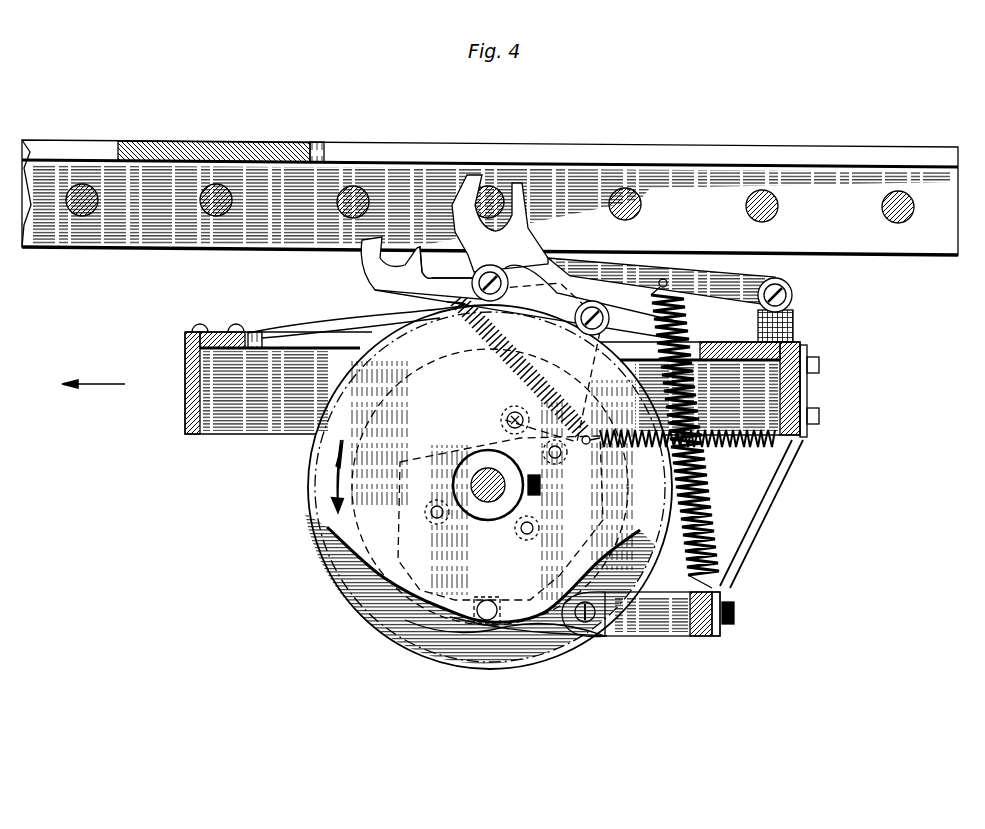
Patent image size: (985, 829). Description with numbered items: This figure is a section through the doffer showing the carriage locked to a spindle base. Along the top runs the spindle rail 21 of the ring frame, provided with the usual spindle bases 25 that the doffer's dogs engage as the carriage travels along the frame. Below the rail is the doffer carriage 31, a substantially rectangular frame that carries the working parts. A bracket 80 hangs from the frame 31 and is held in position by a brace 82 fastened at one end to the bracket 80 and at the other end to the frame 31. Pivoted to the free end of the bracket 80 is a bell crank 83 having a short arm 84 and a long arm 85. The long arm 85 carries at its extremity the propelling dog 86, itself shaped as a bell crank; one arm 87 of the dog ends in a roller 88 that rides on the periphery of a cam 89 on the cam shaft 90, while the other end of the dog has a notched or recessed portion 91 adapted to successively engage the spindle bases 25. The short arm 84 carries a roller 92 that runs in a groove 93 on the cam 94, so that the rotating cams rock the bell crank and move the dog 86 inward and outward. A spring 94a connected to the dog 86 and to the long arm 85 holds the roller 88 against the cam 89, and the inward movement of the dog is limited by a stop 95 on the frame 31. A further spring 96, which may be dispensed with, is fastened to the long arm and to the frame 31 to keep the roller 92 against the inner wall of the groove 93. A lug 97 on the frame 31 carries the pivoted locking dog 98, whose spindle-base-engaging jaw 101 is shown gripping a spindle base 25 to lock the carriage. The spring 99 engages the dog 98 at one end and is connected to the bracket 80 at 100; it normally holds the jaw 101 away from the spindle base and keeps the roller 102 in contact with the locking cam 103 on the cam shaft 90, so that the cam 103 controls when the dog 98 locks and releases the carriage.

The spindle rail 21 is at (215, 152).
The spindle base 25 is at (92, 208).
The doffer carriage 31 is at (806, 396).
The bracket 80 is at (662, 630).
The brace 82 is at (768, 502).
The bell crank 83 is at (572, 636).
The short arm 84 is at (545, 634).
The long arm 85 is at (610, 320).
The propelling dog 86 is at (440, 305).
The arm 87 is at (502, 410).
The roller 88 is at (503, 428).
The cam 89 is at (430, 545).
The cam shaft 90 is at (484, 500).
The notched or recessed portion 91 is at (378, 264).
The roller 92 is at (487, 624).
The groove 93 is at (425, 640).
The cam 94 is at (520, 366).
The spring 94a is at (565, 360).
The stop 95 is at (320, 332).
The spring 96 is at (740, 446).
The lug 97 is at (794, 320).
The locking dog 98 is at (576, 258).
The spring 99 is at (705, 525).
The connection point 100 is at (730, 598).
The spindle-base-engaging jaw 101 is at (515, 208).
The roller 102 is at (472, 275).
The locking cam 103 is at (307, 464).